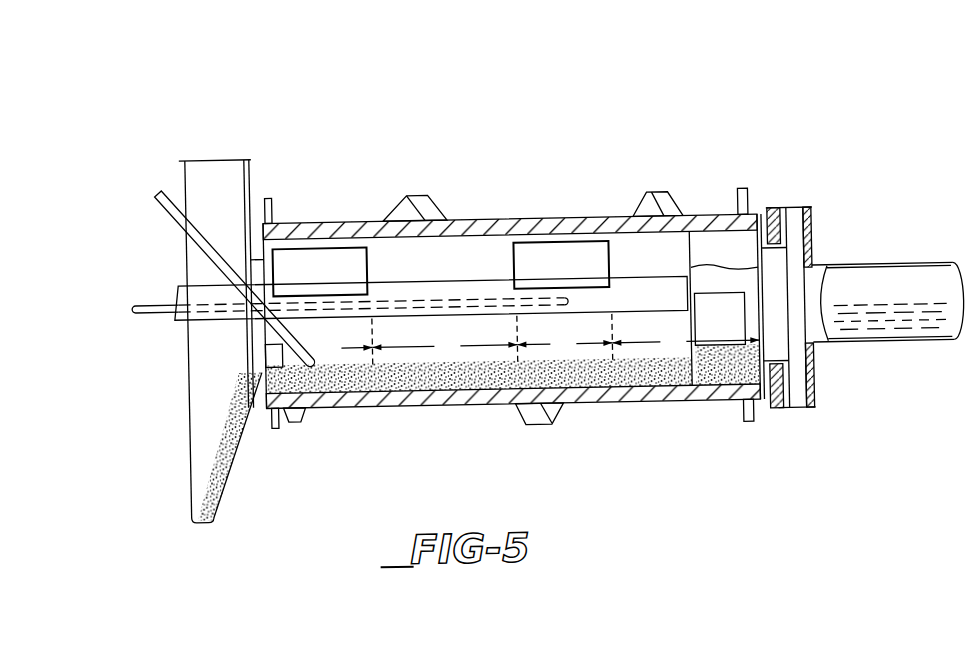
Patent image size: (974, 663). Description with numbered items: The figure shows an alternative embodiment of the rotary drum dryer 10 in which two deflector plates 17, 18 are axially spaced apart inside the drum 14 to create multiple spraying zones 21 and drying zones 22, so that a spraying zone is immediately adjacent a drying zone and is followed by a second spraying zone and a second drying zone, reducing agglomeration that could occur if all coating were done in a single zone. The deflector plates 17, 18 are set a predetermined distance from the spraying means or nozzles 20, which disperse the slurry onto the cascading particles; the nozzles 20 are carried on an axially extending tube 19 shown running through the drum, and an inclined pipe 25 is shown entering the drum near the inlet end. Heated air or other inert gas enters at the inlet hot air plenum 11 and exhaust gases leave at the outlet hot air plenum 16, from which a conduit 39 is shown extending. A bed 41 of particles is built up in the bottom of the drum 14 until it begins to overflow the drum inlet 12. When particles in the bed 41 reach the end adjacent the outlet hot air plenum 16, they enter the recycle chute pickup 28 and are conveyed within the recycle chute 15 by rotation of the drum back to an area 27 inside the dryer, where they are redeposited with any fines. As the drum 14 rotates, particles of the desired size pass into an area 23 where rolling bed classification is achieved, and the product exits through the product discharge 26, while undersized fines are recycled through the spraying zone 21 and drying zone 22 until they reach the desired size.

The rotary drum dryer 10 is at (511, 137).
The inlet hot air plenum 11 is at (219, 155).
The drum inlet 12 is at (234, 397).
The drum 14 is at (482, 228).
The recycle chute 15 is at (660, 195).
The outlet hot air plenum 16 is at (795, 213).
The deflector plate 17 is at (552, 266).
The deflector plate 18 is at (312, 258).
The tube 19 is at (177, 286).
The spraying means or nozzles 20 is at (556, 303).
The spraying zone 21 is at (462, 340).
The drying zone 22 is at (566, 326).
The area 23 is at (248, 326).
The inlet pipe 25 is at (156, 188).
The product discharge 26 is at (186, 501).
The area 27 is at (260, 355).
The recycle chute pickup 28 is at (738, 350).
The discharge conduit 39 is at (756, 275).
The bed 41 is at (460, 362).